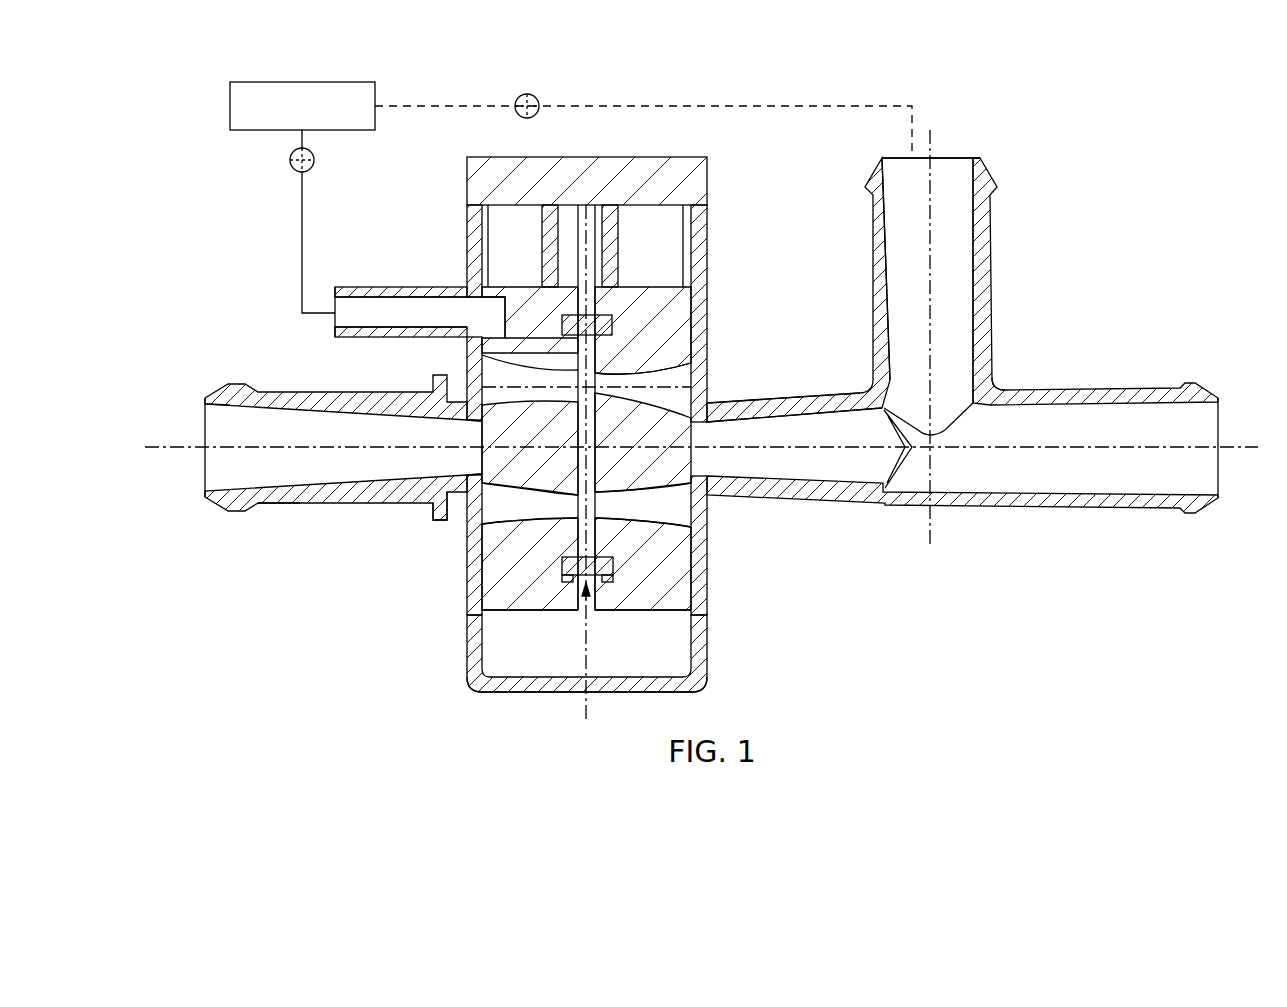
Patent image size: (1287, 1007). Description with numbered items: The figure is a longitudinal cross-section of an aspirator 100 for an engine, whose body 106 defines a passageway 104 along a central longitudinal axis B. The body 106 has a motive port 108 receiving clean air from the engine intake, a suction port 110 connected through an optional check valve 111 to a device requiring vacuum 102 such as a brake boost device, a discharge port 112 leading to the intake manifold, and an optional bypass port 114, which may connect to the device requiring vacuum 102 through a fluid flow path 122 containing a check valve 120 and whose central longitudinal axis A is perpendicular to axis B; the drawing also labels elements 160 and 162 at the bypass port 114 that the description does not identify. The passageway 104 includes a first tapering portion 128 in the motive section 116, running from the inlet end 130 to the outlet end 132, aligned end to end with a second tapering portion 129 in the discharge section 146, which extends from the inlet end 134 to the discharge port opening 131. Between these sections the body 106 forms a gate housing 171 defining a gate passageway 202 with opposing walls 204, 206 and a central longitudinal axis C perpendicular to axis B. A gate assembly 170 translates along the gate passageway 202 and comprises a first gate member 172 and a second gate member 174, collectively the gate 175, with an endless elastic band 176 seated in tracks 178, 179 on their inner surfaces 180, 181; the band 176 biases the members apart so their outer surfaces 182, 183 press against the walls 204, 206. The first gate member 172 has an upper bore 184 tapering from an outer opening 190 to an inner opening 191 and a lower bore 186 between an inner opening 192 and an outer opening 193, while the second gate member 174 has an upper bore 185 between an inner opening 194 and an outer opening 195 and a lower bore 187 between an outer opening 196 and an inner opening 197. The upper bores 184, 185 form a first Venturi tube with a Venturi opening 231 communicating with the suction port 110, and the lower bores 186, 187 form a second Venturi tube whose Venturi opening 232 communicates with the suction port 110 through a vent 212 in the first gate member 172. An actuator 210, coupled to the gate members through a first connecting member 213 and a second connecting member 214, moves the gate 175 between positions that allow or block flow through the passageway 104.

The aspirator 100 is at (1062, 126).
The device requiring vacuum 102 is at (302, 82).
The passageway 104 is at (338, 492).
The body 106 is at (352, 394).
The motive port 108 is at (210, 484).
The suction port 110 is at (362, 300).
The check valve 111 is at (290, 161).
The discharge port 112 is at (1205, 482).
The bypass port 114 is at (870, 230).
The motive section 116 is at (277, 417).
The check valve 120 is at (530, 94).
The fluid flow path 122 is at (790, 104).
The first tapering portion 128 is at (270, 497).
The second tapering portion 129 is at (806, 490).
The inlet end 130 is at (208, 420).
The discharge port opening 131 is at (880, 470).
The outlet end 132 is at (445, 502).
The inlet end 134 is at (720, 470).
The discharge section 146 is at (1080, 420).
The second inlet end 160 is at (958, 158).
The fillet 162 is at (995, 386).
The gate assembly 170 is at (517, 700).
The gate housing 171 is at (707, 656).
The first gate member 172 is at (483, 592).
The second gate member 174 is at (682, 592).
The gate 175 is at (497, 615).
The endless elastic band 176 is at (583, 602).
The track 178 is at (567, 584).
The track 179 is at (608, 584).
The inner surface 180 is at (590, 306).
The inner surface 181 is at (598, 352).
The outer surface 182 is at (470, 574).
The outer surface 183 is at (695, 572).
The upper bore 184 is at (484, 368).
The upper bore 185 is at (692, 368).
The lower bore 186 is at (525, 492).
The lower bore 187 is at (658, 490).
The outer opening 190 is at (480, 421).
The inner opening 191 is at (562, 400).
The inner opening 192 is at (558, 495).
The outer opening 193 is at (485, 530).
The inner opening 194 is at (606, 402).
The outer opening 195 is at (692, 390).
The outer opening 196 is at (692, 522).
The inner opening 197 is at (610, 491).
The gate passageway 202 is at (694, 252).
The wall 204 is at (697, 304).
The wall 206 is at (472, 228).
The actuator 210 is at (708, 180).
The vent 212 is at (487, 325).
The first connecting member 213 is at (545, 240).
The second connecting member 214 is at (612, 220).
The Venturi opening 231 is at (583, 363).
The Venturi opening 232 is at (590, 492).
The central longitudinal axis A is at (935, 535).
The central longitudinal axis B is at (1240, 446).
The central longitudinal axis C is at (588, 708).